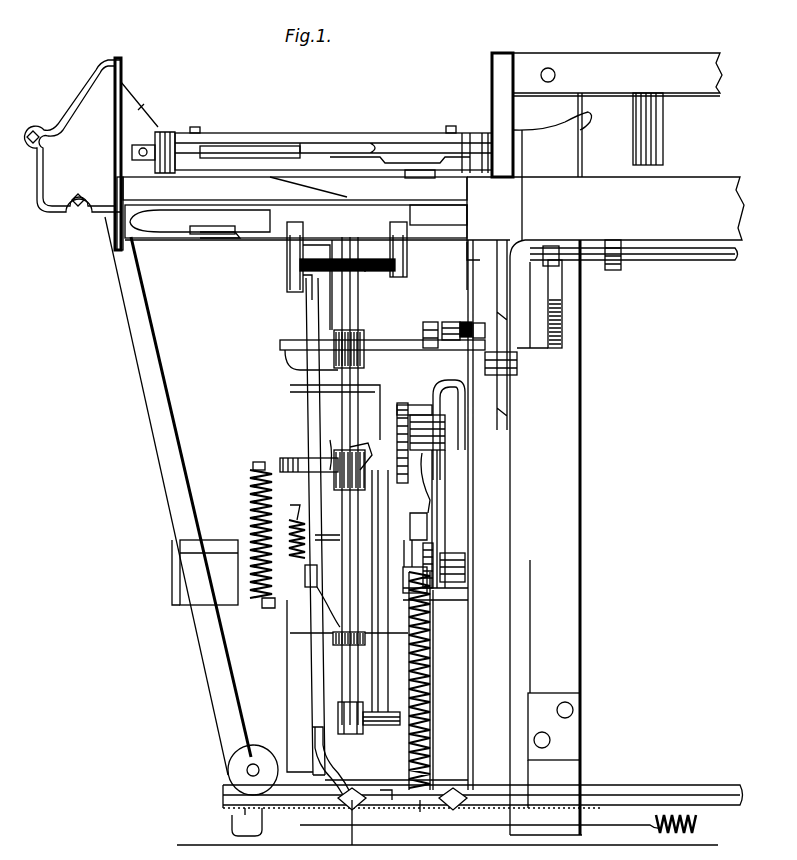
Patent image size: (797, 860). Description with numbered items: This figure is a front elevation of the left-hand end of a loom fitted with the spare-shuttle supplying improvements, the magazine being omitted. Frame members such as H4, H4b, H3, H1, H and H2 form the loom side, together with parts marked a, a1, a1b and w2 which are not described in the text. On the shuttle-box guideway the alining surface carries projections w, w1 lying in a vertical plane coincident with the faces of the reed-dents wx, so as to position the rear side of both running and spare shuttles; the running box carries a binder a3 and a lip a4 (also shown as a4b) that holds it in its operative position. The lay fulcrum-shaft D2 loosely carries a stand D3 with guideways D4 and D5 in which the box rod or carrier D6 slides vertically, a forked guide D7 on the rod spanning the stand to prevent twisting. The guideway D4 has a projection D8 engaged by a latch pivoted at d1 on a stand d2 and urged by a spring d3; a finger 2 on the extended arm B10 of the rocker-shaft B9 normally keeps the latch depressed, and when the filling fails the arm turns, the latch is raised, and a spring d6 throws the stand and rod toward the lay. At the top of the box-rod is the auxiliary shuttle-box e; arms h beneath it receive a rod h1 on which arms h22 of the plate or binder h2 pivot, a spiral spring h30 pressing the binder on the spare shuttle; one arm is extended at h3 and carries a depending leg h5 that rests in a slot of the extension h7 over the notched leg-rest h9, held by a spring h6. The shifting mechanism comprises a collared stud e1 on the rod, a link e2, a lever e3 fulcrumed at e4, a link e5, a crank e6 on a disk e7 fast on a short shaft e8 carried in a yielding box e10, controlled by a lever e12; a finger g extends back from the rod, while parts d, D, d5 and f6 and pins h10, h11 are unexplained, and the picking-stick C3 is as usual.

The bracket / frame arm H4 is at (104, 82).
The upper frame arm H4b is at (468, 118).
The reed-dents wx is at (658, 129).
The frame member H3 is at (707, 175).
The frame member H1 is at (524, 233).
The shaft bar a is at (302, 140).
The threaded end a1 is at (148, 128).
The lip or projection a4 is at (196, 127).
The binder a3 is at (366, 148).
The lip or projection a4b is at (452, 128).
The threaded end a1b is at (488, 90).
The projection w1 is at (295, 190).
The projection w is at (348, 185).
The bar w2 is at (292, 213).
The auxiliary shuttle-box e is at (230, 236).
The plate or binder h2 is at (347, 256).
The arms h is at (400, 270).
The arms of the plate or binder h22 is at (395, 268).
The rod h1 is at (288, 260).
The extension of binder arm h3 is at (298, 285).
The spiral spring h30 is at (347, 277).
The vertical rod D is at (340, 397).
The horizontal shaft d is at (417, 343).
The pivot of holding device d1 is at (497, 317).
The spring d3 is at (458, 322).
The guideway D4 is at (333, 352).
The depending leg h5 is at (300, 352).
The projection D8 is at (364, 356).
The stand d2 is at (478, 365).
The yielding box e10 is at (447, 462).
The rod or finger g is at (391, 443).
The bracket f6 is at (357, 428).
The stand D3 is at (305, 388).
The box rod or carrier D6 is at (350, 672).
The forked guide D7 is at (326, 450).
The cross bar d5 is at (350, 473).
The finger or projection 2 is at (545, 350).
The rocker-shaft B9 is at (707, 257).
The extended arm B10 is at (562, 332).
The column H is at (532, 537).
The frame plate H2 is at (583, 548).
The link e5 is at (430, 492).
The lever e3 is at (411, 485).
The short shaft e8 is at (417, 539).
The disk e7 is at (440, 548).
The crank e6 is at (448, 566).
The link e2 is at (415, 678).
The lever e12 is at (250, 473).
The picking-stick C3 is at (172, 505).
The spring h6 is at (305, 570).
The extension h7 is at (272, 606).
The guideway D5 is at (336, 638).
The collared stud e1 is at (338, 722).
The spring d6 is at (425, 715).
The leg-rest h9 is at (337, 761).
The fulcrum e4 is at (390, 773).
The lay fulcrum-shaft D2 is at (641, 784).
The pin h10 is at (352, 812).
The pin h11 is at (420, 812).